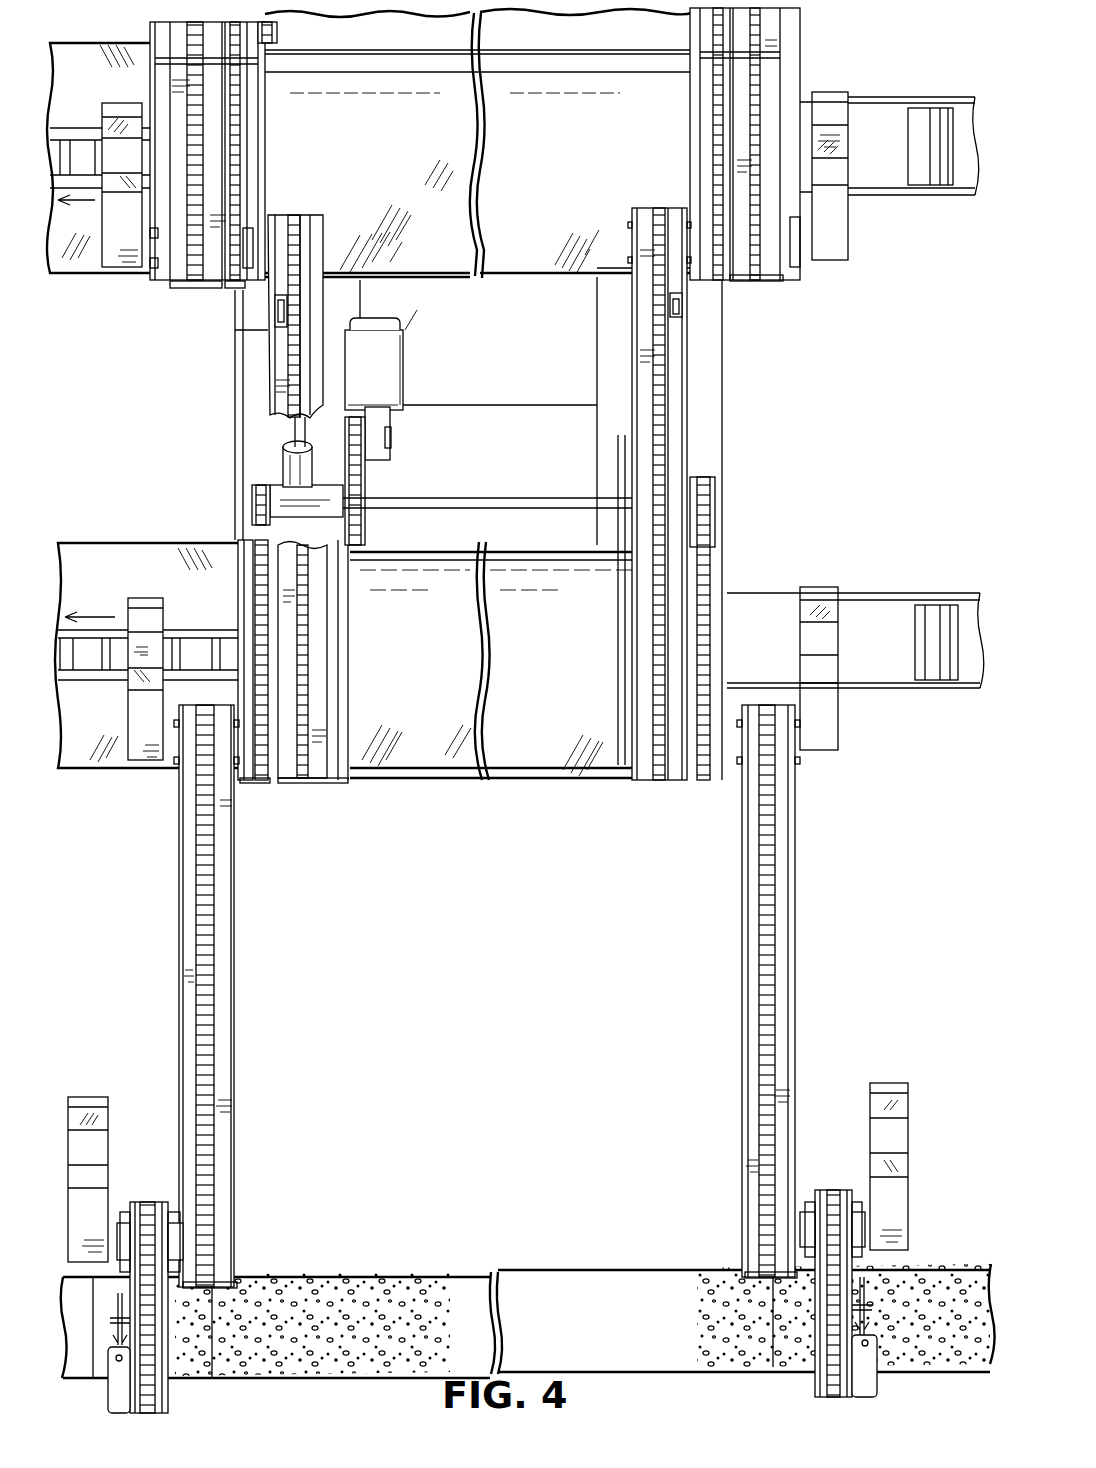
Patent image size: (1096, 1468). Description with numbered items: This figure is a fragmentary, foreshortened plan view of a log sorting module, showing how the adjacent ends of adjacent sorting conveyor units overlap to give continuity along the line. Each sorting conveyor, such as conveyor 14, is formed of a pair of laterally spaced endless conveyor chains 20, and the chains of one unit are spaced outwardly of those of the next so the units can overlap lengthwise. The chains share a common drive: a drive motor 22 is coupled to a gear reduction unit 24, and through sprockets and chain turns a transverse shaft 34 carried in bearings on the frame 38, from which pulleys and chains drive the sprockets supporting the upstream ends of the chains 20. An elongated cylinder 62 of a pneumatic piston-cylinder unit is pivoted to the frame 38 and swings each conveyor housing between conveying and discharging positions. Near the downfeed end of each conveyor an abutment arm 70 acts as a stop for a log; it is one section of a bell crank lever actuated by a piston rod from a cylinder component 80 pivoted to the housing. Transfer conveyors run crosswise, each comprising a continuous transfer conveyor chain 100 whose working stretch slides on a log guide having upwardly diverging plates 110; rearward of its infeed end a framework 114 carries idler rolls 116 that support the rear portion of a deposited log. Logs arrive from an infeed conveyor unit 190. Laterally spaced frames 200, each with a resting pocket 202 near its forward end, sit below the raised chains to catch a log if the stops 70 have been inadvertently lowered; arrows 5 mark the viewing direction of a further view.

The section line 5- 5 is at (195, 695).
The conveyor 14 is at (801, 487).
The endless conveyor chain 20 is at (218, 1048).
The drive motor 22 is at (390, 358).
The gear reduction unit 24 is at (380, 458).
The transverse shaft 34 is at (505, 500).
The frame 38 is at (515, 1281).
The cylinder 62 is at (287, 466).
The abutment arm 70 is at (273, 325).
The cylinder component 80 is at (867, 1373).
The transfer conveyor chain 100 is at (80, 140).
The plate 110 is at (70, 60).
The framework 114 is at (898, 589).
The idler roll 116 is at (920, 165).
The infeed conveyor unit 190 is at (894, 1397).
The frame 200 is at (843, 84).
The resting pocket 202 is at (123, 115).